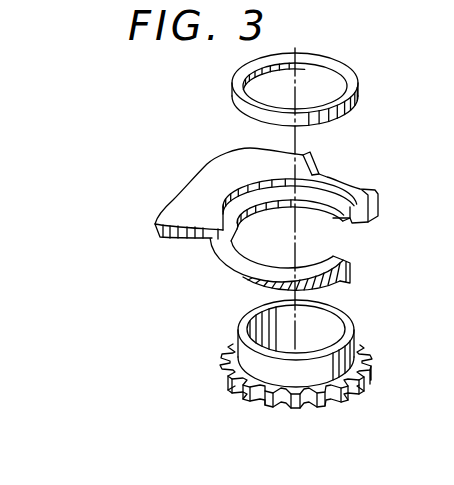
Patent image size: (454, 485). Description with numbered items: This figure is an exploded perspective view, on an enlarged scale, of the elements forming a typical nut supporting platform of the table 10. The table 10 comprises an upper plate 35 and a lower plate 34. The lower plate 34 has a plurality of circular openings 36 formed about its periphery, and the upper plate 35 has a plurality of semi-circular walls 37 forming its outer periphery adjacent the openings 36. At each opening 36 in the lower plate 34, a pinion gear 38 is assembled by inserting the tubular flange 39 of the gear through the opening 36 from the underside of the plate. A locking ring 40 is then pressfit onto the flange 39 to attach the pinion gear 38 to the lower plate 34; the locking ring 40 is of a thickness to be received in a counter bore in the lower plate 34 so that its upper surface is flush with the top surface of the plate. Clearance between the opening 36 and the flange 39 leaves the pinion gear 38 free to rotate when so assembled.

The table 10 is at (266, 205).
The lower plate 34 is at (346, 290).
The upper plate 35 is at (232, 167).
The circular opening 36 is at (333, 218).
The semi-circular wall 37 is at (312, 173).
The pinion gear 38 is at (323, 354).
The tubular flange 39 is at (353, 321).
The locking ring 40 is at (352, 75).